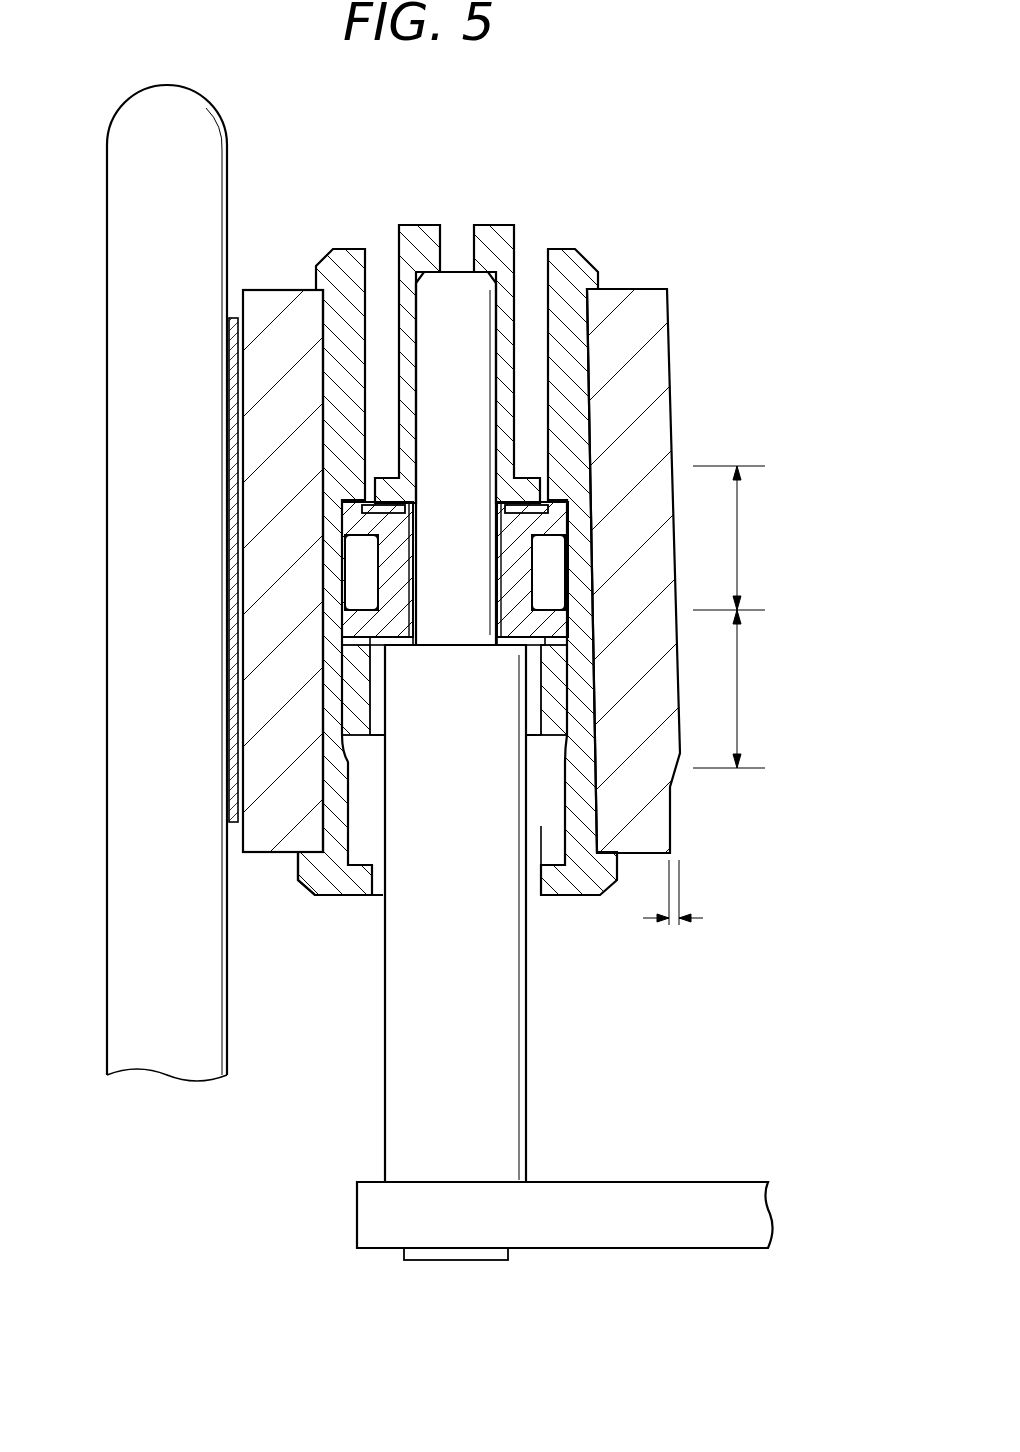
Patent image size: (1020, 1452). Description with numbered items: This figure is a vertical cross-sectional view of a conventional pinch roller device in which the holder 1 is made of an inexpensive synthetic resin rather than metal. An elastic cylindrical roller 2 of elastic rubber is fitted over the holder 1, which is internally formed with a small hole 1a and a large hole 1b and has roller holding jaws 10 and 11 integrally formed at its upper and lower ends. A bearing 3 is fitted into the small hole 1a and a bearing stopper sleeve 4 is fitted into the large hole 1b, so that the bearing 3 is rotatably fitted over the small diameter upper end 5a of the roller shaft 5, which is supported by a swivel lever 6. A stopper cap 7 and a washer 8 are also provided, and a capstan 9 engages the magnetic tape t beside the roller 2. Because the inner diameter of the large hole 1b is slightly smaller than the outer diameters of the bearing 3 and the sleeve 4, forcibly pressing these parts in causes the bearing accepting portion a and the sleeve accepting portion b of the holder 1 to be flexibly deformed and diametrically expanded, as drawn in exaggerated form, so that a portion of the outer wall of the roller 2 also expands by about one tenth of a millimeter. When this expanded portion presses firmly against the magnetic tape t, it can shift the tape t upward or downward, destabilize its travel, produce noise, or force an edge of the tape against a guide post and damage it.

The holder 1 is at (566, 248).
The small hole 1a is at (535, 380).
The large hole 1b is at (541, 865).
The elastic cylindrical roller 2 is at (630, 289).
The bearing 3 is at (522, 570).
The bearing stopper sleeve 4 is at (560, 690).
The roller shaft 5 is at (508, 1098).
The small diameter upper end 5a is at (470, 620).
The swivel lever 6 is at (628, 1230).
The stopper cap 7 is at (498, 226).
The washer 8 is at (400, 645).
The capstan 9 is at (213, 140).
The roller holding jaw 10 is at (316, 282).
The roller holding jaw 11 is at (290, 870).
The magnetic tape t is at (232, 609).
The bearing accepting portion a is at (729, 538).
The sleeve accepting portion b is at (729, 689).